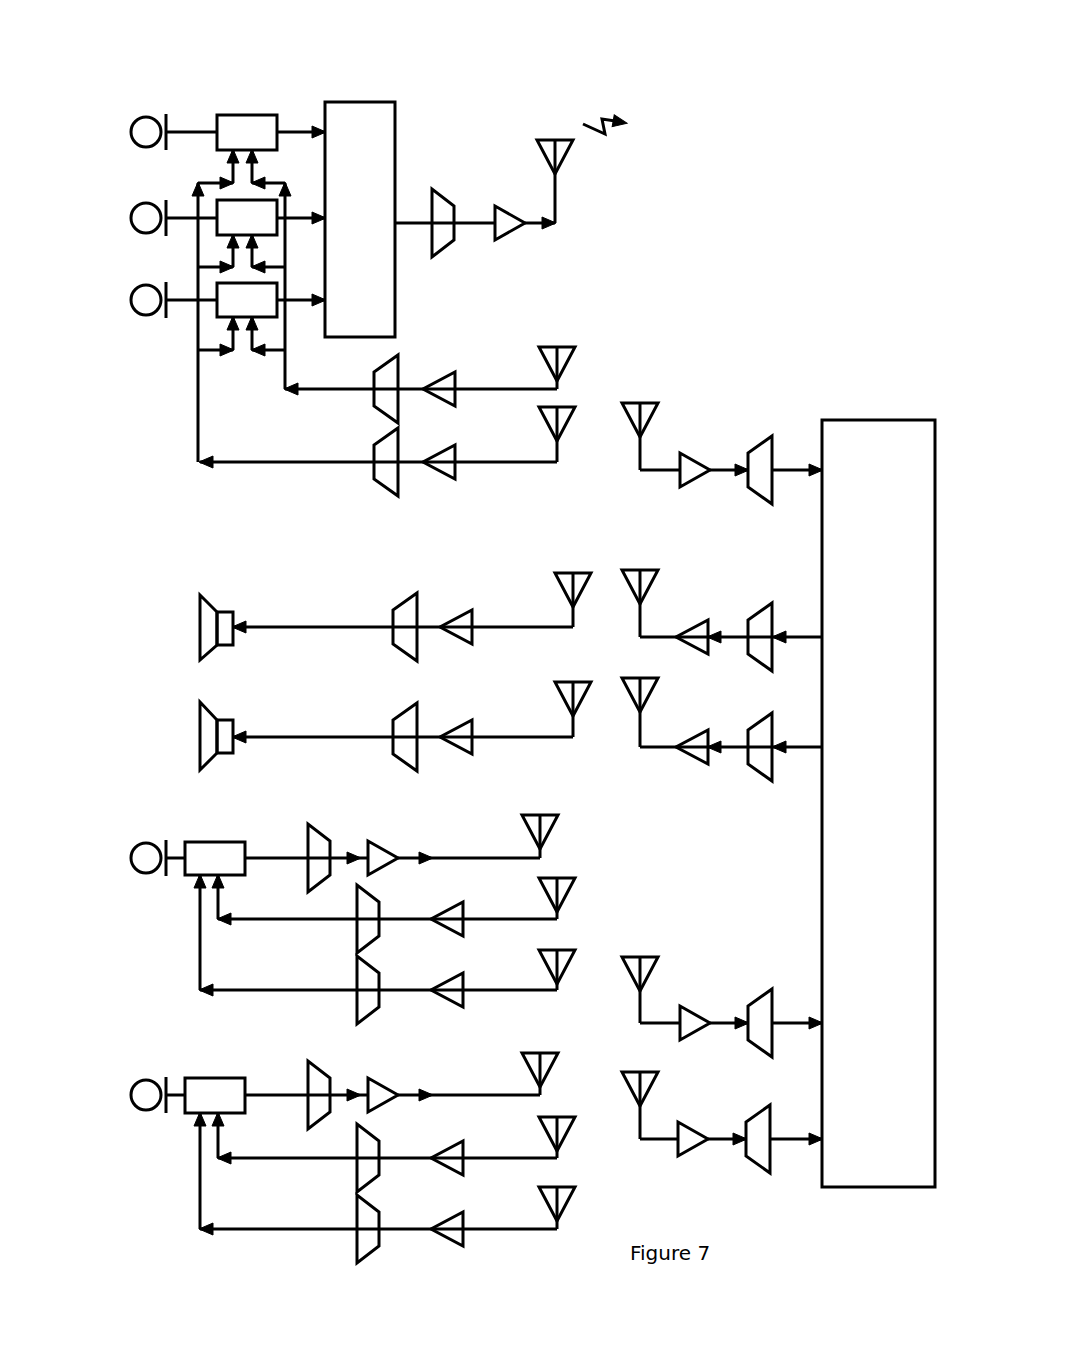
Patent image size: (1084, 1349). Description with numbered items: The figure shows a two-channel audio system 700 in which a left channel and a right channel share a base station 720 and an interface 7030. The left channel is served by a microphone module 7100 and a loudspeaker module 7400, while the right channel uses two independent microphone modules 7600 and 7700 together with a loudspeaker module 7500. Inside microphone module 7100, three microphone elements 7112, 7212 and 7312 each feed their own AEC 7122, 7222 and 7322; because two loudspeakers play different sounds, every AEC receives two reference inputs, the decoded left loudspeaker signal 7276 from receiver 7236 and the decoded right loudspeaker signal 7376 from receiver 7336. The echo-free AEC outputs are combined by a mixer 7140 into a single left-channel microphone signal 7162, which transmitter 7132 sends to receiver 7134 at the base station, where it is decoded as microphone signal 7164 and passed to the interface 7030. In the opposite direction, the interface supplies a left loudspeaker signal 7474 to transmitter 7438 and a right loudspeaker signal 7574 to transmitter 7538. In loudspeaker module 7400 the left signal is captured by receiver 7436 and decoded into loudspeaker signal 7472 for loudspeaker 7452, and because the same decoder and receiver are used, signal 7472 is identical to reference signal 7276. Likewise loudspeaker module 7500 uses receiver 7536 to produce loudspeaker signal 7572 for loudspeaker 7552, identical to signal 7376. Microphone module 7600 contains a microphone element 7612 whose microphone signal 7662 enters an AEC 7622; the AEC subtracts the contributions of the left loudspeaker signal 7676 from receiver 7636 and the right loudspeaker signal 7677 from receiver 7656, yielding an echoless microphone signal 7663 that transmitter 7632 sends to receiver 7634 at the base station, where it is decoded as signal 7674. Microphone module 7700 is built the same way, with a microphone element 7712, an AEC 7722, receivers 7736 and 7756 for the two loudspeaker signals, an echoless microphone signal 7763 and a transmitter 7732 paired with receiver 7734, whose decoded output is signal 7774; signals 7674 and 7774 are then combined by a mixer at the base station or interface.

The audio system 700 is at (366, 46).
The microphone module 7100 is at (155, 436).
The microphone element 7112 is at (140, 117).
The AEC 7122 is at (265, 115).
The mixer 7140 is at (350, 102).
The transmitter 7132 is at (570, 140).
The left channel microphone signal 7162 is at (416, 228).
The microphone element 7212 is at (148, 200).
The AEC 7222 is at (222, 198).
The microphone element 7312 is at (143, 283).
The AEC 7322 is at (218, 318).
The receiver 7236 is at (553, 345).
The decoded loudspeaker signal 7276 is at (352, 392).
The receiver 7336 is at (570, 405).
The decoded loudspeaker signal 7376 is at (337, 466).
The base station 720 is at (744, 306).
The receiver 7134 is at (655, 402).
The microphone signal 7164 is at (812, 475).
The interface 7030 is at (868, 420).
The transmitter 7438 is at (643, 570).
The left loudspeaker signal 7474 is at (793, 630).
The transmitter 7538 is at (645, 678).
The loudspeaker signal 7574 is at (812, 740).
The receiver 7634 is at (636, 957).
The decoded microphone signal 7674 is at (800, 1020).
The receiver 7734 is at (636, 1073).
The decoded microphone signal 7774 is at (797, 1137).
The loudspeaker module 7400 is at (163, 621).
The loudspeaker 7452 is at (215, 600).
The loudspeaker signal 7472 is at (327, 625).
The receiver 7436 is at (560, 572).
The loudspeaker module 7500 is at (163, 731).
The loudspeaker 7552 is at (212, 705).
The loudspeaker signal 7572 is at (337, 735).
The receiver 7536 is at (573, 681).
The microphone module 7600 is at (163, 816).
The microphone element 7612 is at (135, 847).
The microphone signal 7662 is at (175, 853).
The AEC 7622 is at (195, 878).
The echoless microphone signal 7663 is at (258, 852).
The transmitter 7632 is at (538, 815).
The loudspeaker signal 7676 is at (240, 918).
The receiver 7636 is at (543, 878).
The loudspeaker signal 7677 is at (237, 988).
The receiver 7656 is at (543, 950).
The microphone module 7700 is at (163, 1048).
The microphone element 7712 is at (135, 1087).
The AEC 7722 is at (195, 1115).
The echoless microphone signal 7763 is at (258, 1090).
The transmitter 7732 is at (552, 1043).
The receiver 7736 is at (543, 1117).
The receiver 7756 is at (543, 1187).